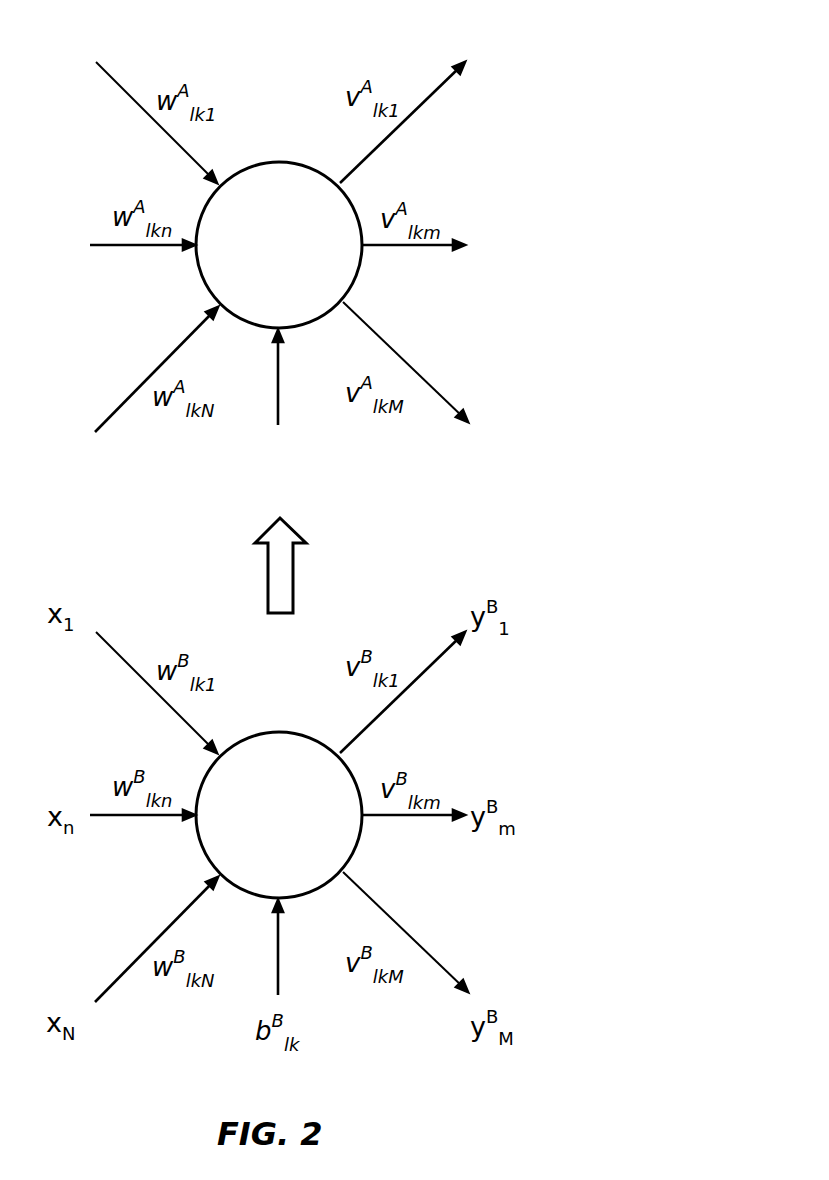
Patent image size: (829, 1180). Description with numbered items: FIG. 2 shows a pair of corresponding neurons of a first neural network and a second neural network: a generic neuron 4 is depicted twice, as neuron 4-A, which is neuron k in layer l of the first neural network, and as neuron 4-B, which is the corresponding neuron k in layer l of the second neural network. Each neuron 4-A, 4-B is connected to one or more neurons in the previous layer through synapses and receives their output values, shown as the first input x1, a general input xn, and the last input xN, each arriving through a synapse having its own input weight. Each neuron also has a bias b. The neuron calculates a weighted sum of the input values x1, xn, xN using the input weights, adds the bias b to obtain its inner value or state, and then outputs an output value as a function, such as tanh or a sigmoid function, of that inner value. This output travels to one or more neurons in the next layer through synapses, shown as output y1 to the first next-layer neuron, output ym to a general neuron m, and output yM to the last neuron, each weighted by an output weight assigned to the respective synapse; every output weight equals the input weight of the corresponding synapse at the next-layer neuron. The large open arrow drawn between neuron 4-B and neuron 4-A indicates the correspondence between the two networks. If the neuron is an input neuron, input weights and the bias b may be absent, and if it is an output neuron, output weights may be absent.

The neuron 4 is at (279, 501).
The neuron 4-A is at (279, 162).
The neuron 4-B is at (279, 732).
The output value x1 is at (132, 105).
The output value xn is at (121, 249).
The output value xN is at (132, 390).
The bias b is at (278, 407).
The output value y1 is at (425, 104).
The output value ym is at (439, 247).
The output value yM is at (428, 390).